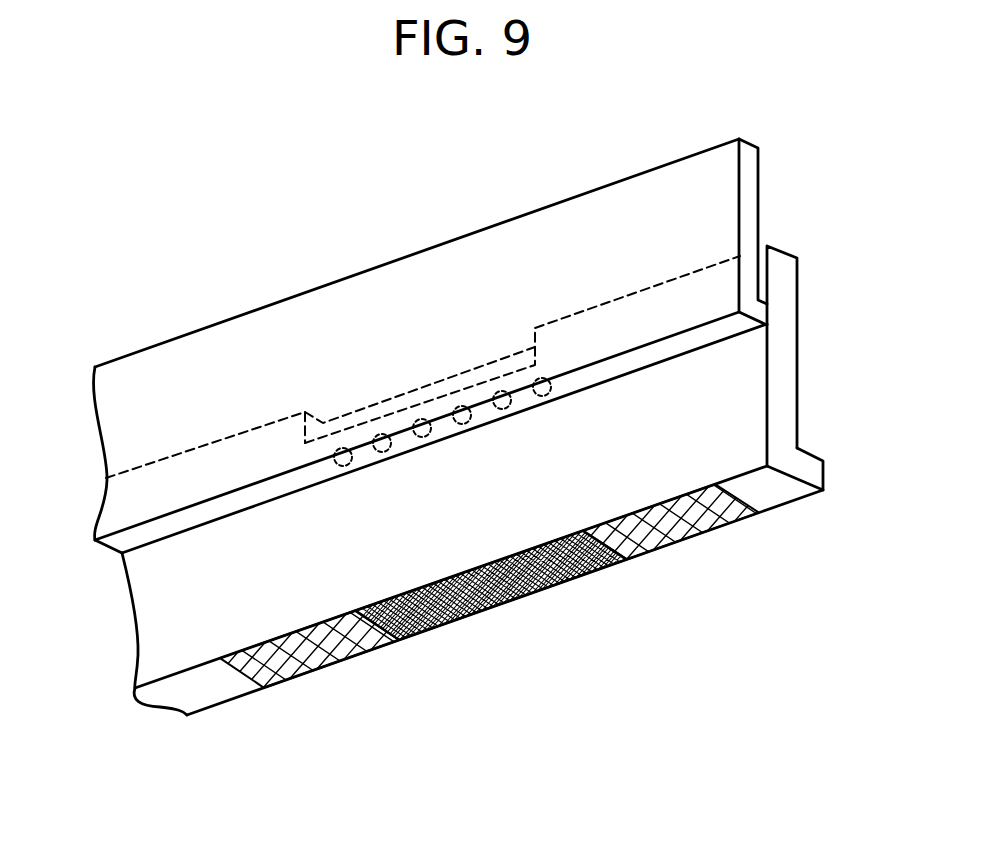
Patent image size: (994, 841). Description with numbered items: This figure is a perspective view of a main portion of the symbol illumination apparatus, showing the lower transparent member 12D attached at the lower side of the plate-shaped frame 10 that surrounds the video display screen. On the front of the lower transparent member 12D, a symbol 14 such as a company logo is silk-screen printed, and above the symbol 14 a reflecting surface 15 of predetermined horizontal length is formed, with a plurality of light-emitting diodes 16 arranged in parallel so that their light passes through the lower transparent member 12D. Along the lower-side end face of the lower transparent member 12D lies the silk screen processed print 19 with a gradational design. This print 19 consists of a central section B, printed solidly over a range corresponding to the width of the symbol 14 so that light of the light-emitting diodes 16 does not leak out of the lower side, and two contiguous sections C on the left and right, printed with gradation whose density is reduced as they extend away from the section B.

The frame 10 is at (715, 218).
The lower transparent member 12D is at (780, 367).
The symbol 14 is at (373, 542).
The reflecting surface 15 is at (374, 408).
The light-emitting diodes 16 is at (462, 402).
The silk screen processed print with a gradational design 19 is at (486, 625).
The section B is at (643, 573).
The sections C is at (408, 655).